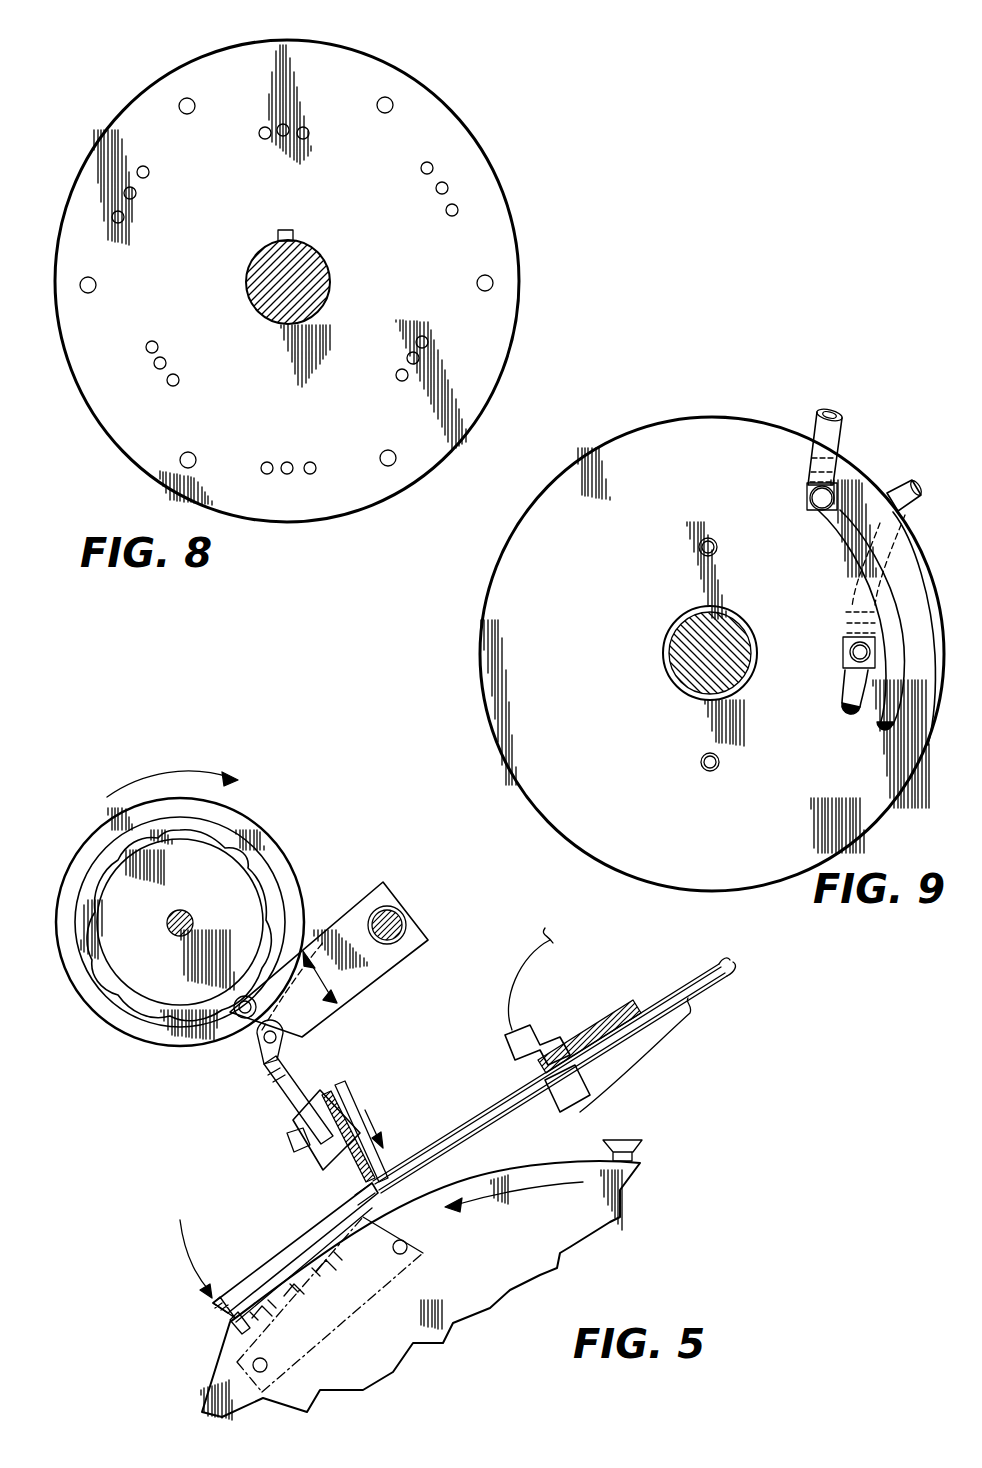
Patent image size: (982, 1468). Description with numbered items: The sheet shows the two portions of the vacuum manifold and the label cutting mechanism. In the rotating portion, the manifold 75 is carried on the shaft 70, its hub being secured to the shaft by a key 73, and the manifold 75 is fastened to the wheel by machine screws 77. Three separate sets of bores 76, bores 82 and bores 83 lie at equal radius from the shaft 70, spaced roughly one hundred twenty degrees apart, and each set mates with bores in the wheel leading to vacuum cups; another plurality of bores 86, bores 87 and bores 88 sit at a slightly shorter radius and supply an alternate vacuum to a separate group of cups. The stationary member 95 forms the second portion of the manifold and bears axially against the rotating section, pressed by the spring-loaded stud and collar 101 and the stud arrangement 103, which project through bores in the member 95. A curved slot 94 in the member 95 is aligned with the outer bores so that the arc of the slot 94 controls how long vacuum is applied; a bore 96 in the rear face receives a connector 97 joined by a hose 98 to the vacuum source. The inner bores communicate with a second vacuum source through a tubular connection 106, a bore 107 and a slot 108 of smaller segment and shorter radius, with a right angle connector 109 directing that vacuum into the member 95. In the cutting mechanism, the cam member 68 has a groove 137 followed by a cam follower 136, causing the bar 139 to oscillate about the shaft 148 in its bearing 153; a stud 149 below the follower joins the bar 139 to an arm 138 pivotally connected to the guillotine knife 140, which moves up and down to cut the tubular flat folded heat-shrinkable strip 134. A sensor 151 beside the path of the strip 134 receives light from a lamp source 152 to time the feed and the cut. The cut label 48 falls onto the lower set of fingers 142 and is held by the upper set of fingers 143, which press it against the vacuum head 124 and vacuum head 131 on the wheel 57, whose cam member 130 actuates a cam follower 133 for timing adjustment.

In FIG. 8, the manifold 75 is at (217, 50).
In FIG. 8, the shaft 70 is at (246, 278).
In FIG. 9, the shaft 70 is at (663, 650).
In FIG. 8, the key 73 is at (296, 225).
In FIG. 8, the machine screws 77 is at (183, 102).
In FIG. 8, the bores 82 is at (143, 178).
In FIG. 8, the bores 86 is at (300, 140).
In FIG. 8, the bores 76 is at (446, 208).
In FIG. 8, the bores 87 is at (167, 380).
In FIG. 8, the bores 88 is at (398, 372).
In FIG. 8, the bores 83 is at (307, 462).
In FIG. 9, the stationary member 95 is at (718, 417).
In FIG. 9, the stud arrangement 103 is at (706, 538).
In FIG. 9, the stud and collar 101 is at (708, 772).
In FIG. 9, the hose 98 is at (843, 420).
In FIG. 9, the tubular connection 106 is at (897, 487).
In FIG. 9, the connector 97 is at (805, 490).
In FIG. 9, the bore 96 is at (820, 510).
In FIG. 9, the curved slot 94 is at (880, 730).
In FIG. 9, the right angle connector 109 is at (842, 640).
In FIG. 9, the bore 107 is at (850, 652).
In FIG. 9, the slot 108 is at (842, 702).
In FIG. 5, the cam member 68 is at (258, 825).
In FIG. 5, the groove 137 is at (117, 990).
In FIG. 5, the cam follower 136 is at (238, 1015).
In FIG. 5, the bar 139 is at (392, 888).
In FIG. 5, the bearing 153 is at (372, 912).
In FIG. 5, the shaft 148 is at (405, 915).
In FIG. 5, the stud 149 is at (282, 1037).
In FIG. 5, the arm 138 is at (292, 1104).
In FIG. 5, the sensor 151 is at (552, 1108).
In FIG. 5, the tubular flat folded heat-shrinkable strip 134 is at (713, 966).
In FIG. 5, the lamp source 152 is at (515, 1060).
In FIG. 5, the vacuum head 124 is at (633, 1145).
In FIG. 5, the cam member 130 is at (520, 1283).
In FIG. 5, the wheel 57 is at (207, 1398).
In FIG. 5, the guillotine knife 140 is at (350, 1180).
In FIG. 5, the lower set of fingers 142 is at (215, 1313).
In FIG. 5, the vacuum head 131 is at (297, 1257).
In FIG. 5, the label 48 is at (237, 1320).
In FIG. 5, the cam follower 133 is at (253, 1365).
In FIG. 5, the upper set of fingers 143 is at (222, 1290).